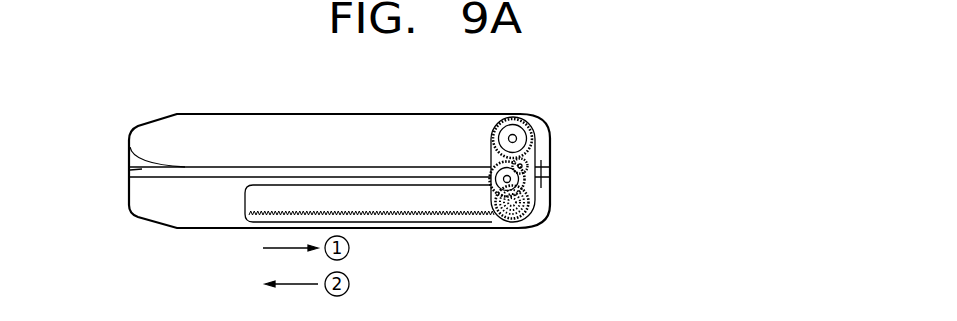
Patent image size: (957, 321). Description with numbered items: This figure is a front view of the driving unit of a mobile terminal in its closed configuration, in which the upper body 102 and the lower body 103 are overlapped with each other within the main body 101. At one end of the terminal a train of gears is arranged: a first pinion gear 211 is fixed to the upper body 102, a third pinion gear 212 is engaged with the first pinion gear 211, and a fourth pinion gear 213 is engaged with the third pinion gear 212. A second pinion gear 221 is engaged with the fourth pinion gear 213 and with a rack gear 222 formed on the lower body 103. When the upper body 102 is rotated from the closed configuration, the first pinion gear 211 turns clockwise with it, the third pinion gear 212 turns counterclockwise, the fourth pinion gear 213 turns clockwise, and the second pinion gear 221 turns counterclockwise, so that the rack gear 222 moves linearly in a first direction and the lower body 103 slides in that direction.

The main body 101 is at (129, 163).
The upper body 102 is at (317, 125).
The lower body 103 is at (222, 229).
The first pinion gear 211 is at (533, 139).
The third pinion gear 212 is at (522, 166).
The fourth pinion gear 213 is at (524, 179).
The second pinion gear 221 is at (524, 206).
The rack gear 222 is at (396, 225).